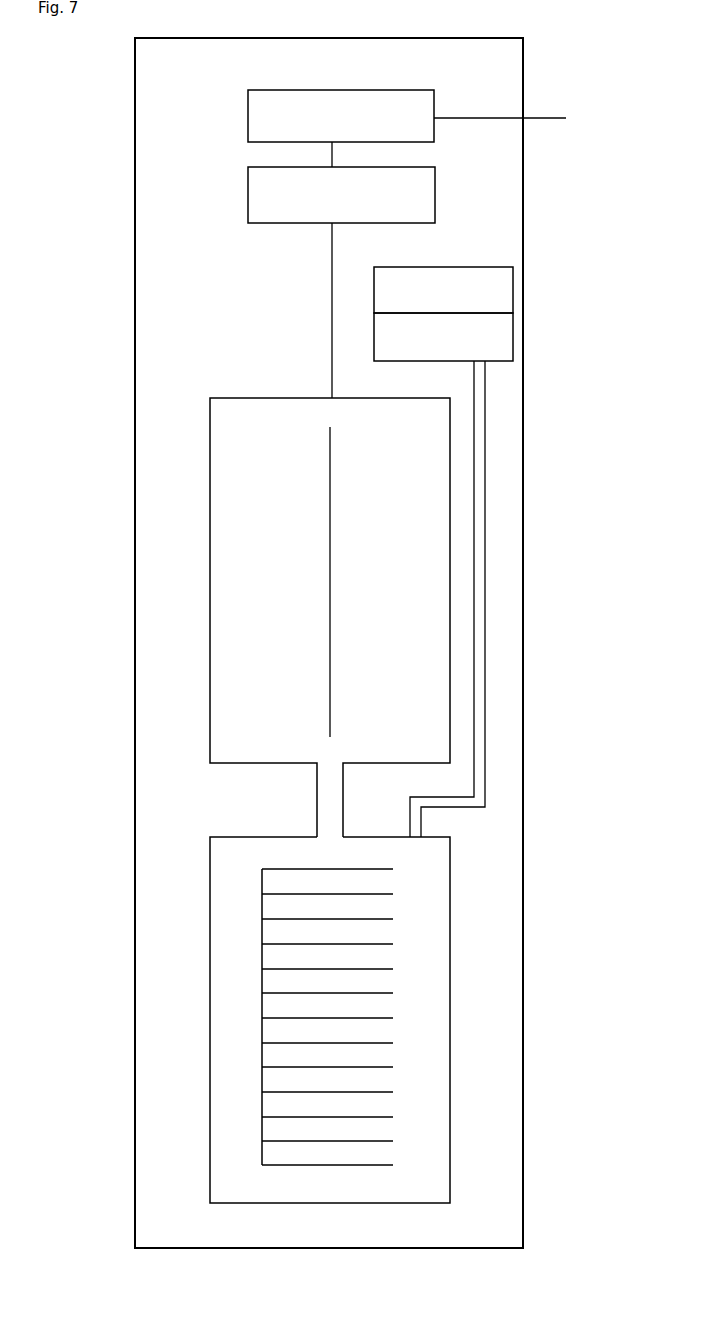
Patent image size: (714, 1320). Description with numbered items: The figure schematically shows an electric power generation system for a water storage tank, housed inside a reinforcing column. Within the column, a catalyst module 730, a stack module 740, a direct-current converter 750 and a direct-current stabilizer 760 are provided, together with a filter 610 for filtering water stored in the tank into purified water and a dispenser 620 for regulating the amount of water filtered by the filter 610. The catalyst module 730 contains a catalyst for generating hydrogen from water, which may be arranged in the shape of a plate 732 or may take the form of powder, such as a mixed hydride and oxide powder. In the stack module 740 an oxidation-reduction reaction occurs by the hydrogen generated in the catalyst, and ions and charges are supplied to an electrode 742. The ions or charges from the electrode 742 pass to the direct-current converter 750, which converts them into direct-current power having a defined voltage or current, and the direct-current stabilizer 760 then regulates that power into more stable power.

The direct-current stabilizer 760 is at (248, 120).
The direct-current converter 750 is at (248, 196).
The filter 610 is at (513, 291).
The dispenser 620 is at (513, 337).
The stack module 740 is at (210, 498).
The electrode 742 is at (330, 657).
The catalyst module 730 is at (450, 1030).
The plate 732 is at (262, 958).